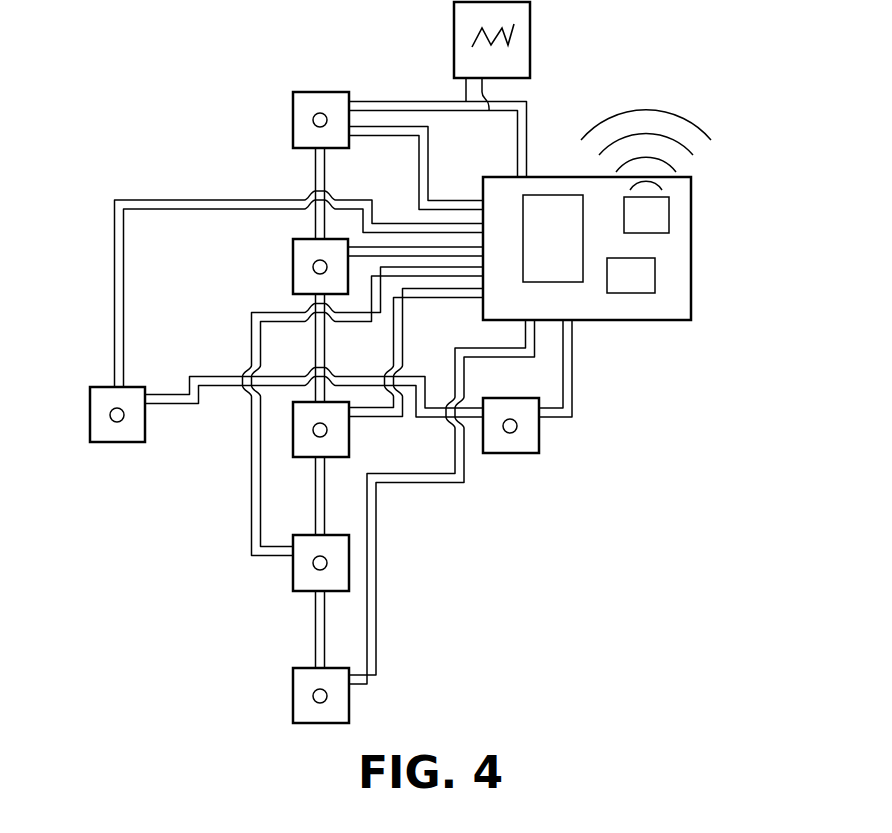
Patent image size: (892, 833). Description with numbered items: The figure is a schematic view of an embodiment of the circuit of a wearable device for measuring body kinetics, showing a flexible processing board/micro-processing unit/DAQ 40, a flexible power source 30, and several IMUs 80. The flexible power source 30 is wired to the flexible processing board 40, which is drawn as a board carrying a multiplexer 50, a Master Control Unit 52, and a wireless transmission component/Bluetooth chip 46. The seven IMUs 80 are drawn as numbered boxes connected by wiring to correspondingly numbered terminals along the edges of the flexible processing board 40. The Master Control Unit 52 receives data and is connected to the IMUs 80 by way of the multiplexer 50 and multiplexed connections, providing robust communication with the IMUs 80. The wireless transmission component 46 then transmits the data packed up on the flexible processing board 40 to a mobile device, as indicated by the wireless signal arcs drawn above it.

The flexible power source 30 is at (530, 46).
The flexible processing board/micro-processing unit/DAQ 40 is at (650, 320).
The wireless transmission component/Bluetooth chip 46 is at (669, 213).
The multiplexer 50 is at (575, 282).
The Master Control Unit (MCU) 52 is at (655, 272).
The inertial measurement units (IMUs) 80 is at (293, 139).